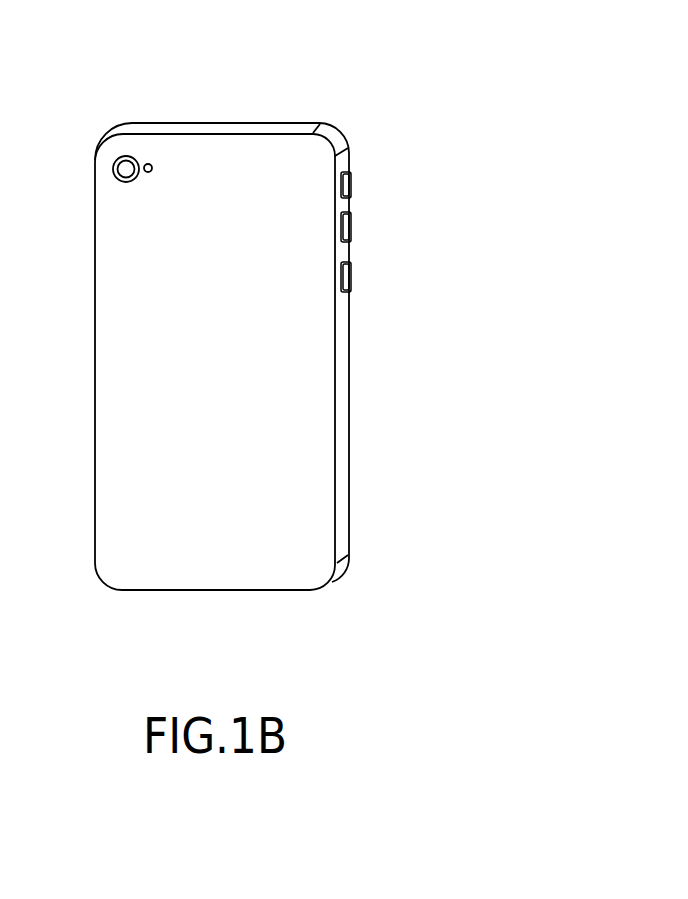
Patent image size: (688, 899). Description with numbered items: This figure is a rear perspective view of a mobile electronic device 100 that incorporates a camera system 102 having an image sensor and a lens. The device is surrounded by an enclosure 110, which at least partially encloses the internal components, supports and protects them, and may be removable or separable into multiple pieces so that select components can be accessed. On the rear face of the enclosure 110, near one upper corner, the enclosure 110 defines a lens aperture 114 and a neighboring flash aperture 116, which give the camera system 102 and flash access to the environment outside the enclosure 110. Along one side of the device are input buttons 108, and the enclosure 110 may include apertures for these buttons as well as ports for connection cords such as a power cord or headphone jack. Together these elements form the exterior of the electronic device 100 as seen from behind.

The mobile electronic device 100 is at (452, 110).
The camera system 102 is at (117, 160).
The input button 108 is at (352, 277).
The enclosure 110 is at (305, 423).
The lens aperture 114 is at (126, 168).
The flash aperture 116 is at (152, 167).